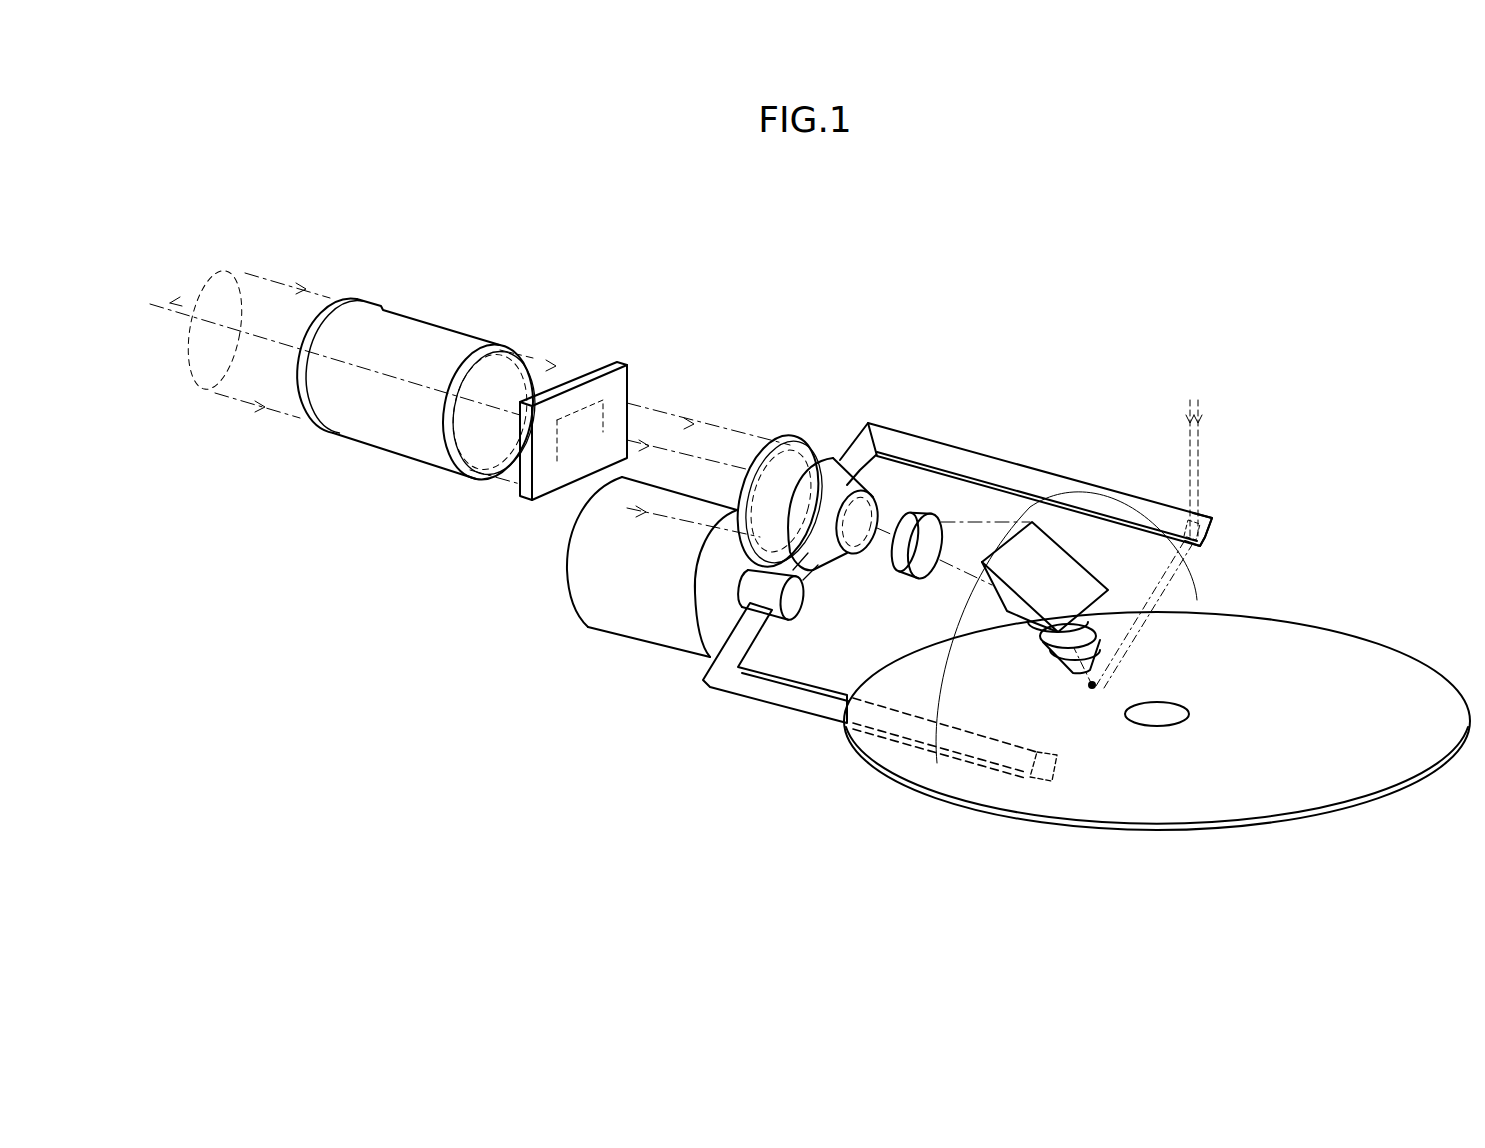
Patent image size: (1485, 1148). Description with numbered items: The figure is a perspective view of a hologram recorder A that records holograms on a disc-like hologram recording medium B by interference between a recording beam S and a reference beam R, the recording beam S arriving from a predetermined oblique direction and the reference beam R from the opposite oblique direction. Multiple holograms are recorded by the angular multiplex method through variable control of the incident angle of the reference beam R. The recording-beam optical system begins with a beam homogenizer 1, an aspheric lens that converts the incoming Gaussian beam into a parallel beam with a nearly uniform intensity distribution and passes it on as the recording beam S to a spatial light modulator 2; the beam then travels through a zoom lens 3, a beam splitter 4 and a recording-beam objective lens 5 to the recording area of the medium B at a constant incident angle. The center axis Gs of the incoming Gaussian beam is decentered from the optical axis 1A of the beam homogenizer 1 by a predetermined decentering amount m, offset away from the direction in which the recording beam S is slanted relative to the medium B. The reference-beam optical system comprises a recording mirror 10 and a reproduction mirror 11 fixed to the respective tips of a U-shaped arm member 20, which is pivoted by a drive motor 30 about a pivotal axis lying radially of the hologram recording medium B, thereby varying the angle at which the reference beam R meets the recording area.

The beam homogenizer 1 is at (437, 332).
The optical axis 1A is at (215, 362).
The spatial light modulator 2 is at (618, 362).
The zoom lens 3 is at (850, 478).
The beam splitter 4 is at (1058, 562).
The recording-beam objective lens 5 is at (1070, 652).
The recording mirror 10 is at (1215, 526).
The reproduction mirror 11 is at (1035, 796).
The arm member 20 is at (970, 452).
The drive motor 30 is at (623, 626).
The hologram recorder A is at (859, 304).
The hologram recording medium B is at (1297, 622).
The center axis of the incoming Gaussian beam Gs is at (197, 306).
The reference beam R is at (1205, 450).
The recording beam S is at (722, 434).
The decentering amount m is at (443, 374).